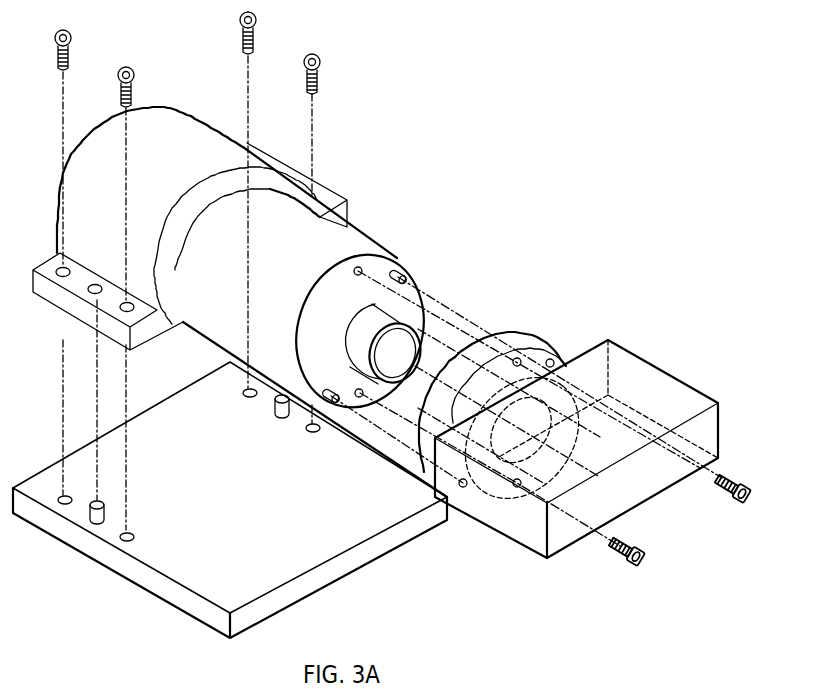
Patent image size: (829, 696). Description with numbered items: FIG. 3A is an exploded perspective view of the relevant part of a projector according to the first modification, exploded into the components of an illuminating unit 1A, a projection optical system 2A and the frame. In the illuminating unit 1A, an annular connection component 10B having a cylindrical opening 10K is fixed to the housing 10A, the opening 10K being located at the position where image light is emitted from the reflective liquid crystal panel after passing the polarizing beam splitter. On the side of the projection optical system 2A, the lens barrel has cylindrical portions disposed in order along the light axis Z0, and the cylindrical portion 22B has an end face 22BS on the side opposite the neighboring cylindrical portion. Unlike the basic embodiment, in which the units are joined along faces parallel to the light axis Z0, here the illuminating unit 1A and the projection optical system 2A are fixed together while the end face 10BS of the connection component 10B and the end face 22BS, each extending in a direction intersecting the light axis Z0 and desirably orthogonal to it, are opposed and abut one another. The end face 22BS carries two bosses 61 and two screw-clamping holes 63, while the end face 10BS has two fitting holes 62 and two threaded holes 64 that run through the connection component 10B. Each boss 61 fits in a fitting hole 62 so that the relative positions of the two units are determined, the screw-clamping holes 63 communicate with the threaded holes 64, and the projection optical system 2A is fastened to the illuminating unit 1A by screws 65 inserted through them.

The illuminating unit 1A is at (644, 331).
The projection optical system 2A is at (345, 164).
The housing 10A is at (685, 395).
The connection component 10B is at (443, 405).
The end face 10BS is at (457, 347).
The opening 10K is at (563, 546).
The cylindrical portion 22B is at (240, 318).
The end face 22BS is at (310, 365).
The boss 61 is at (403, 274).
The fitting hole 62 is at (553, 362).
The screw-clamping hole 63 is at (362, 268).
The threaded hole 64 is at (519, 360).
The screw 65 is at (625, 560).
The light axis Z0 is at (432, 330).